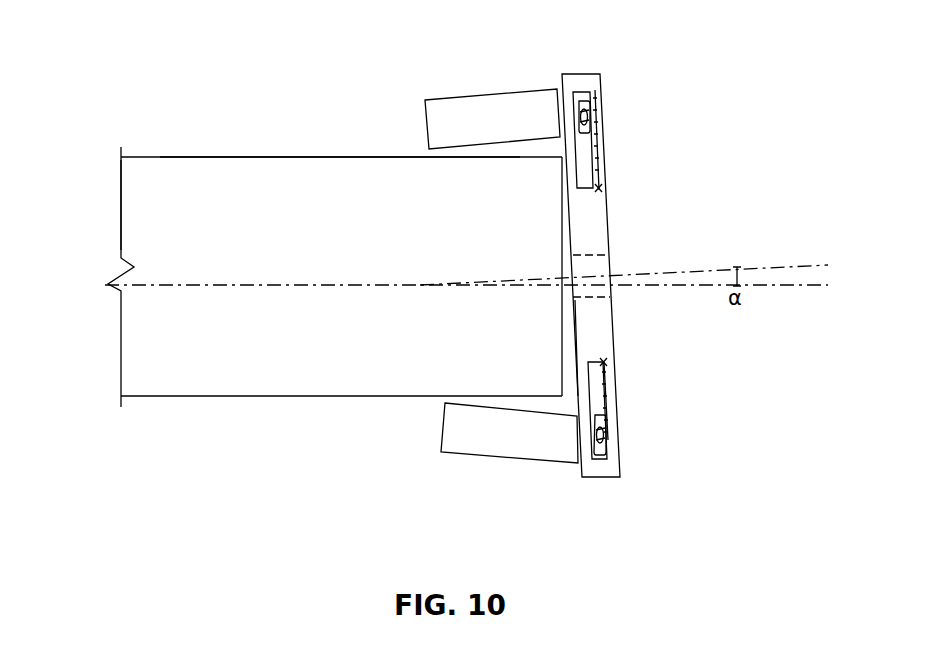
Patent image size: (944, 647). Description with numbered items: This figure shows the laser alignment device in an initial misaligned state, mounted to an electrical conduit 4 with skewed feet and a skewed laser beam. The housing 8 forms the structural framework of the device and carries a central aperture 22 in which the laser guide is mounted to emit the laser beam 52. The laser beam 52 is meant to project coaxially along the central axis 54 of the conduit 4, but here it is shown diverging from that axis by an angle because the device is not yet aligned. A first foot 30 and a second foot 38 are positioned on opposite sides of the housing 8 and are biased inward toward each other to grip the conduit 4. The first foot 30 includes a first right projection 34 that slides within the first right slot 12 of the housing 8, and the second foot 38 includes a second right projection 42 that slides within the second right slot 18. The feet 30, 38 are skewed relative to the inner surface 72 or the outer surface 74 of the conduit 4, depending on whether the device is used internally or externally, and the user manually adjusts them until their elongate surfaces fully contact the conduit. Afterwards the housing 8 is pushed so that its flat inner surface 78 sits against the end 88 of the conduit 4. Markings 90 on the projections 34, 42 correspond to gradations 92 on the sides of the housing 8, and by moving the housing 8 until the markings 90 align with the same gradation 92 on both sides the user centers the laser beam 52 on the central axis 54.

The conduit 4 is at (218, 132).
The housing 8 is at (577, 48).
The first right slot 12 is at (585, 148).
The second right slot 18 is at (595, 393).
The central aperture 22 is at (608, 267).
The first foot 30 is at (484, 80).
The first right projection 34 is at (592, 113).
The second foot 38 is at (501, 472).
The second right projection 42 is at (603, 440).
The laser beam 52 is at (778, 264).
The central axis 54 is at (778, 286).
The inner surface 72 is at (148, 158).
The outer surface 74 is at (295, 157).
The flat inner surface 78 is at (577, 339).
The end 88 is at (562, 357).
The markings 90 is at (590, 127).
The gradations 92 is at (600, 191).